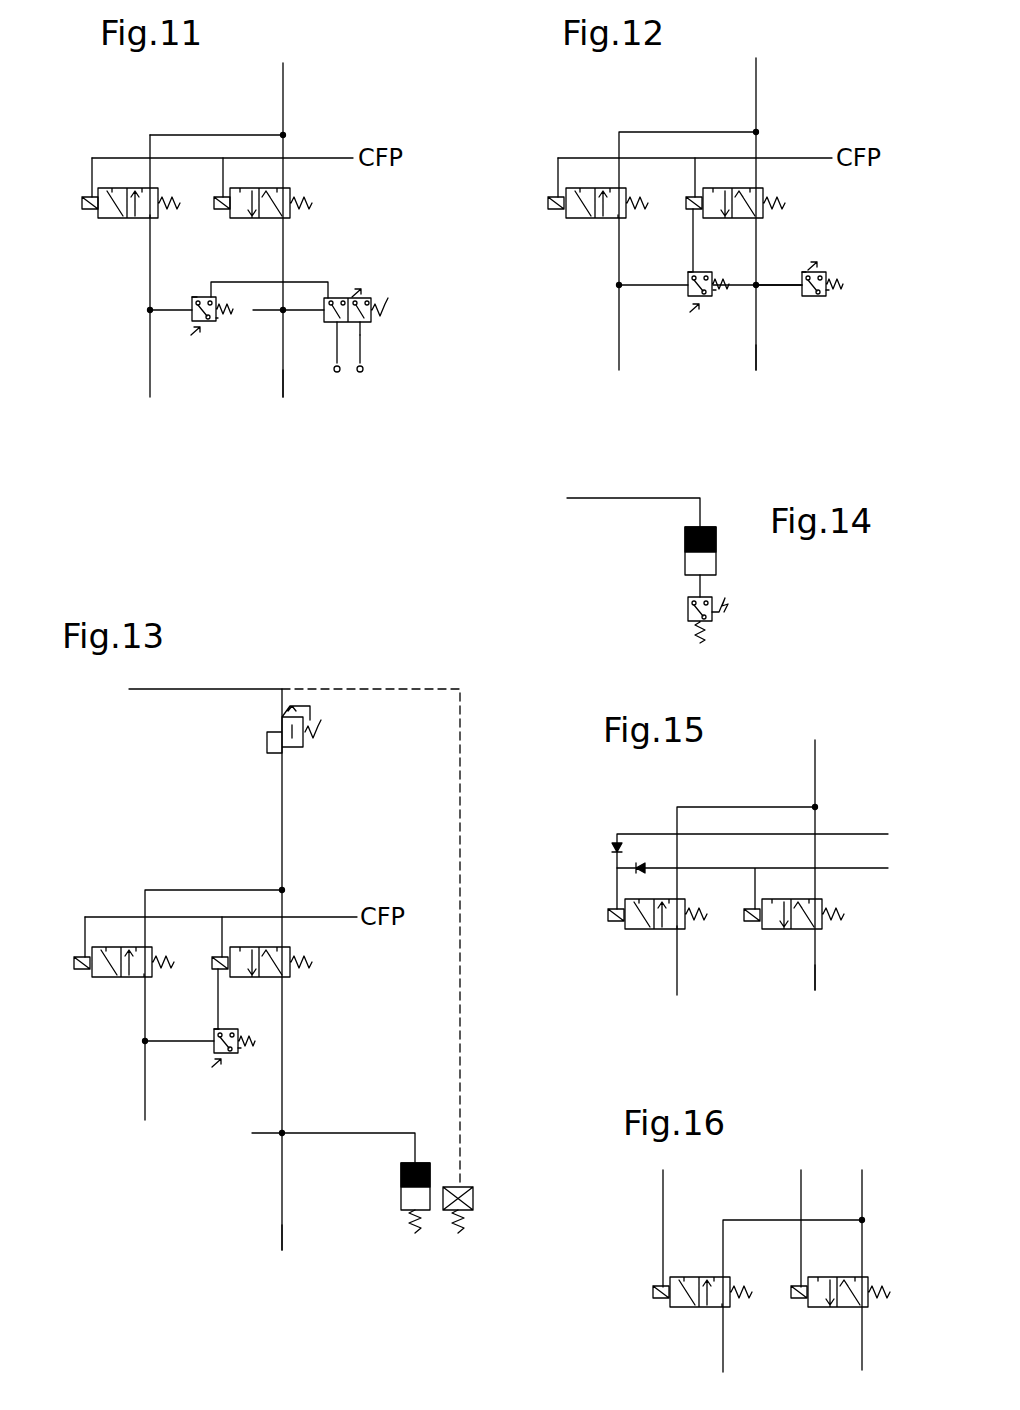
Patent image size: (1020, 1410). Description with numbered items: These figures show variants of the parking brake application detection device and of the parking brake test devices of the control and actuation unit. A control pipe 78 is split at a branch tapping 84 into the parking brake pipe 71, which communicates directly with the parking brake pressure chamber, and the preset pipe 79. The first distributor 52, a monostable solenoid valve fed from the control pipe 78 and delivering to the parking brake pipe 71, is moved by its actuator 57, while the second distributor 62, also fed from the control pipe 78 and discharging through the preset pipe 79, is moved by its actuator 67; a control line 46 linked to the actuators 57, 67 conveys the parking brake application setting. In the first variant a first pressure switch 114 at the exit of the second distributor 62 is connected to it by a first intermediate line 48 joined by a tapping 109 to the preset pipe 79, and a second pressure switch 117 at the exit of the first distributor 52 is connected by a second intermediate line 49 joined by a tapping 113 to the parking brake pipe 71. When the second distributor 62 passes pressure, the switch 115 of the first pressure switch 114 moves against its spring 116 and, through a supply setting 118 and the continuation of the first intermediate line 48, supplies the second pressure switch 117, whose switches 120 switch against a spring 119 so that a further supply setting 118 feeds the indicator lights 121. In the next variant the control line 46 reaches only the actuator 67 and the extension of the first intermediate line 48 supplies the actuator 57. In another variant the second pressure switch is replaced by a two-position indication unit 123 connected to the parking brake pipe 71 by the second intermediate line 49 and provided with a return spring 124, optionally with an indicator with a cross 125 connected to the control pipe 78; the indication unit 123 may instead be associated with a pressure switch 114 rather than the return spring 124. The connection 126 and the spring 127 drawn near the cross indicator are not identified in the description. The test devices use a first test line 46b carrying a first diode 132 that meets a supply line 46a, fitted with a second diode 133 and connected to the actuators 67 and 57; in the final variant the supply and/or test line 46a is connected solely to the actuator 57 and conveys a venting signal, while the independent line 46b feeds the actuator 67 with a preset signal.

In FIG. 11, the control line 46 is at (120, 158).
In FIG. 12, the control line 46 is at (592, 158).
In FIG. 13, the control line 46 is at (100, 917).
In FIG. 15, the supply line 46a is at (868, 868).
In FIG. 16, the supply line 46a is at (801, 1180).
In FIG. 15, the first test line 46b is at (868, 834).
In FIG. 16, the first test line 46b is at (663, 1200).
In FIG. 11, the first intermediate line 48 is at (301, 282).
In FIG. 12, the first intermediate line 48 is at (693, 235).
In FIG. 13, the first intermediate line 48 is at (218, 988).
In FIG. 11, the second intermediate line 49 is at (302, 310).
In FIG. 12, the second intermediate line 49 is at (775, 285).
In FIG. 13, the second intermediate line 49 is at (415, 1133).
In FIG. 11, the first distributor 52 is at (250, 218).
In FIG. 12, the first distributor 52 is at (728, 188).
In FIG. 13, the first distributor 52 is at (290, 977).
In FIG. 15, the first distributor 52 is at (777, 930).
In FIG. 16, the first distributor 52 is at (825, 1307).
In FIG. 11, the actuator 57 is at (221, 210).
In FIG. 12, the actuator 57 is at (686, 203).
In FIG. 13, the actuator 57 is at (212, 963).
In FIG. 15, the actuator 57 is at (744, 915).
In FIG. 16, the actuator 57 is at (791, 1292).
In FIG. 11, the second distributor 62 is at (110, 218).
In FIG. 12, the second distributor 62 is at (562, 218).
In FIG. 13, the second distributor 62 is at (100, 977).
In FIG. 15, the second distributor 62 is at (637, 930).
In FIG. 16, the second distributor 62 is at (686, 1307).
In FIG. 11, the actuator 67 is at (82, 203).
In FIG. 12, the actuator 67 is at (548, 203).
In FIG. 13, the actuator 67 is at (74, 963).
In FIG. 15, the actuator 67 is at (608, 915).
In FIG. 16, the actuator 67 is at (653, 1292).
In FIG. 11, the parking brake pipe 71 is at (283, 397).
In FIG. 12, the parking brake pipe 71 is at (756, 366).
In FIG. 13, the parking brake pipe 71 is at (282, 1250).
In FIG. 15, the parking brake pipe 71 is at (815, 968).
In FIG. 11, the control pipe 78 is at (283, 97).
In FIG. 12, the control pipe 78 is at (756, 100).
In FIG. 13, the control pipe 78 is at (170, 689).
In FIG. 15, the control pipe 78 is at (815, 770).
In FIG. 16, the control pipe 78 is at (862, 1180).
In FIG. 11, the preset pipe 79 is at (150, 300).
In FIG. 12, the preset pipe 79 is at (670, 132).
In FIG. 13, the preset pipe 79 is at (180, 890).
In FIG. 15, the preset pipe 79 is at (795, 807).
In FIG. 11, the branch tapping 84 is at (283, 135).
In FIG. 11, the tapping 109 is at (150, 310).
In FIG. 13, the tapping 109 is at (145, 1041).
In FIG. 11, the tapping 113 is at (256, 310).
In FIG. 12, the tapping 113 is at (750, 285).
In FIG. 13, the tapping 113 is at (252, 1133).
In FIG. 11, the first pressure switch 114 is at (192, 304).
In FIG. 12, the first pressure switch 114 is at (688, 283).
In FIG. 14, the first pressure switch 114 is at (688, 606).
In FIG. 13, the first pressure switch 114 is at (240, 1055).
In FIG. 11, the switch 115 is at (193, 297).
In FIG. 12, the switch 115 is at (690, 297).
In FIG. 13, the switch 115 is at (238, 1034).
In FIG. 11, the spring 116 is at (222, 320).
In FIG. 12, the spring 116 is at (846, 285).
In FIG. 13, the spring 116 is at (240, 1048).
In FIG. 11, the second pressure switch 117 is at (366, 324).
In FIG. 11, the supply setting 118 is at (197, 332).
In FIG. 12, the supply setting 118 is at (816, 262).
In FIG. 13, the supply setting 118 is at (222, 1062).
In FIG. 11, the spring 119 is at (390, 310).
In FIG. 11, the switch 120 is at (337, 324).
In FIG. 11, the indicator light 121 is at (360, 376).
In FIG. 14, the indication unit 123 is at (685, 553).
In FIG. 13, the indication unit 123 is at (401, 1173).
In FIG. 13, the return spring 124 is at (412, 1232).
In FIG. 13, the indicator with a cross 125 is at (473, 1198).
In FIG. 13, the control connection 126 is at (460, 760).
In FIG. 13, the return spring of actuator 127 is at (465, 1228).
In FIG. 15, the first diode 132 is at (611, 848).
In FIG. 15, the second diode 133 is at (640, 863).